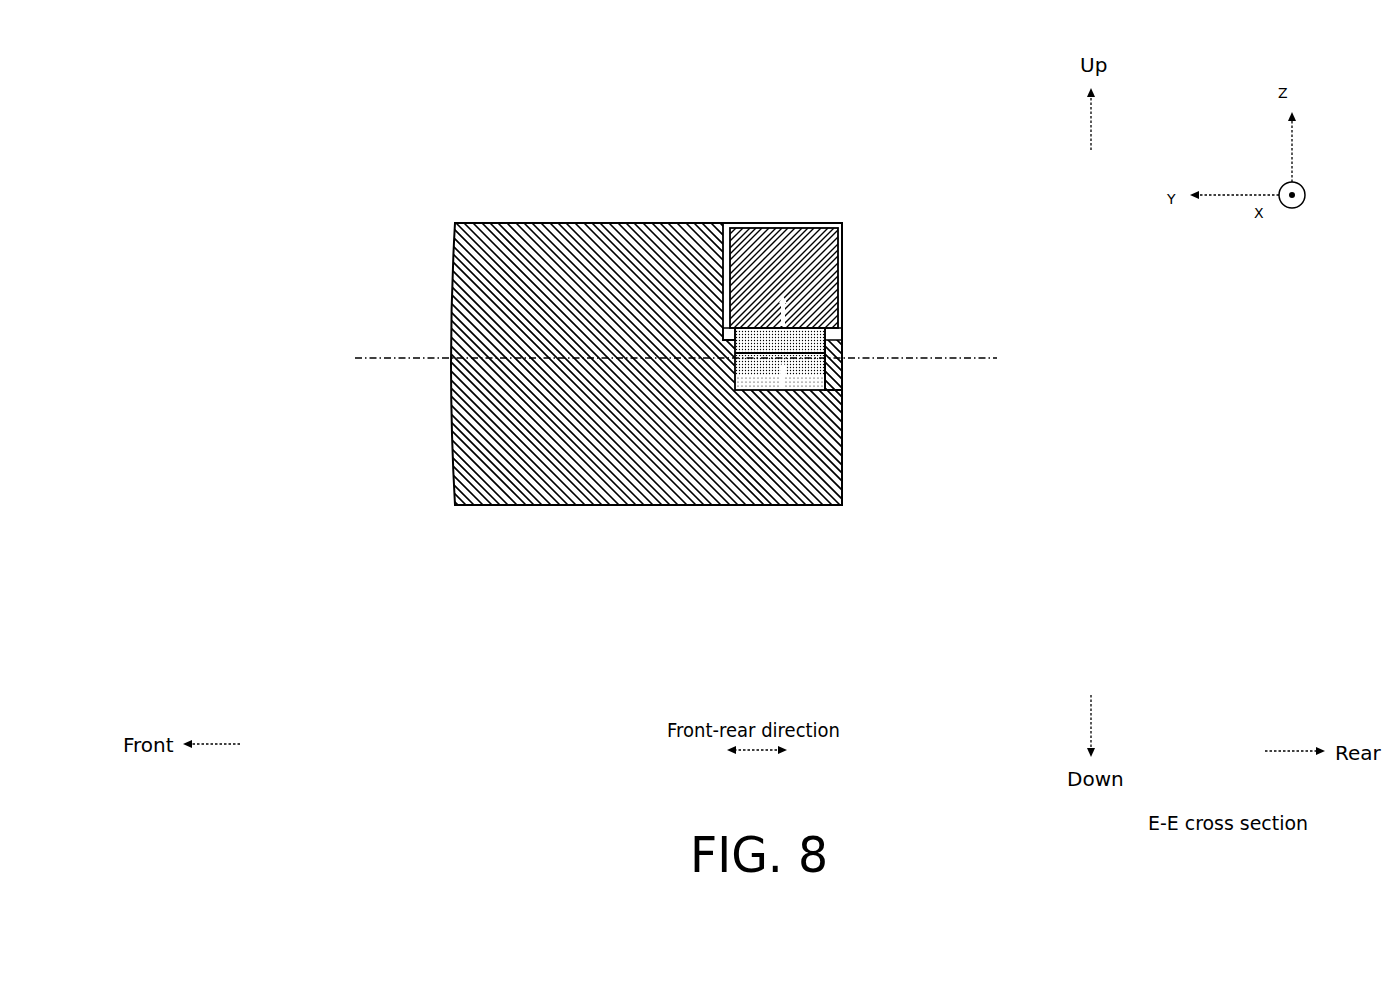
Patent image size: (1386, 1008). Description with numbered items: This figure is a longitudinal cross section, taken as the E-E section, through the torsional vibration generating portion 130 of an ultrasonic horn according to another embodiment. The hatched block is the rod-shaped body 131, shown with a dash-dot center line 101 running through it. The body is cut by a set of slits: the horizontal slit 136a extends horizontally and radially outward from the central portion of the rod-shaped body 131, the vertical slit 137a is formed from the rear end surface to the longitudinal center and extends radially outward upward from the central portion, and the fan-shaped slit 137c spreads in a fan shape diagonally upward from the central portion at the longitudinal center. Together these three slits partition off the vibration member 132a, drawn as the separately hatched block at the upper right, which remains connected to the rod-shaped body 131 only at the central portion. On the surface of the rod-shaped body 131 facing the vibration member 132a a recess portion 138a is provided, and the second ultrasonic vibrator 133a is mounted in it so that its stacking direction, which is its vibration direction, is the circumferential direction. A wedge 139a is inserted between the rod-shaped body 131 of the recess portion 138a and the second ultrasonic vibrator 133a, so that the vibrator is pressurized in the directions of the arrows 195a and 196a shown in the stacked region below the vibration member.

The torsional vibration generating portion 130 is at (367, 182).
The center axis 101 is at (380, 358).
The rod-shaped body 131 is at (630, 222).
The fan-shaped slit 137c is at (719, 222).
The vertical slit 137a is at (762, 222).
The vibration member 132a is at (828, 222).
The arrow 196a is at (842, 275).
The second ultrasonic vibrator 133a is at (842, 310).
The horizontal slit 136a is at (842, 331).
The arrow 195a is at (842, 392).
The recess portion 138a is at (842, 455).
The wedge 139a is at (830, 507).